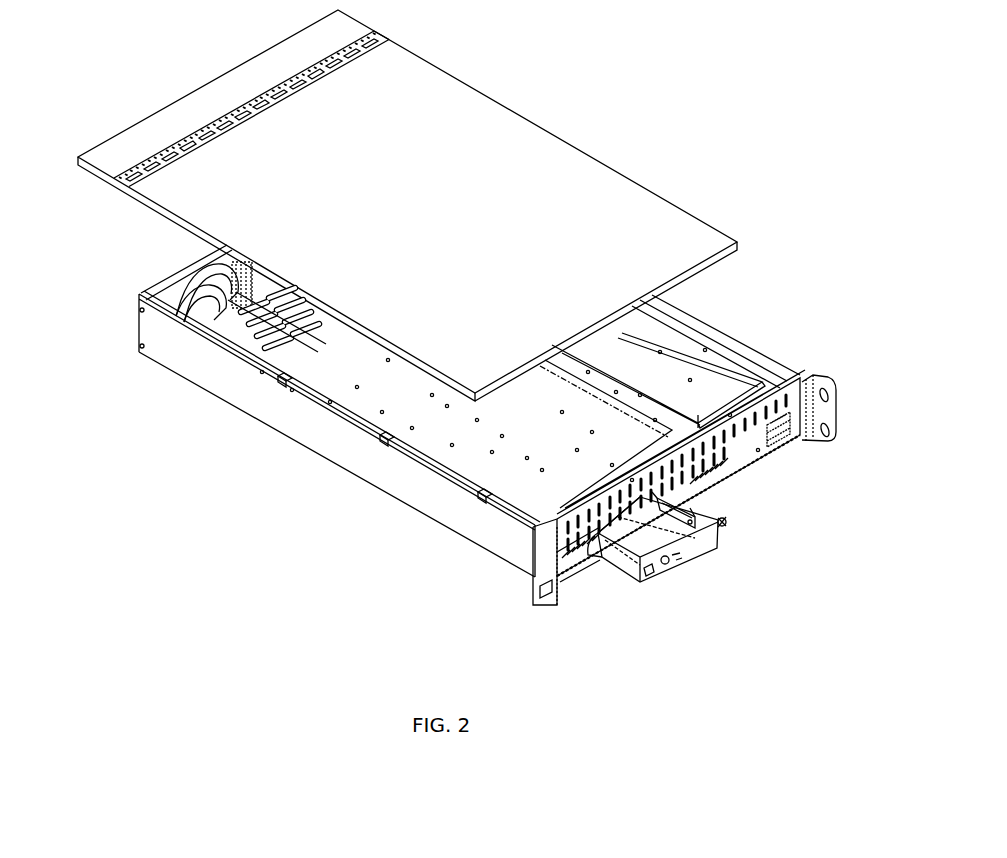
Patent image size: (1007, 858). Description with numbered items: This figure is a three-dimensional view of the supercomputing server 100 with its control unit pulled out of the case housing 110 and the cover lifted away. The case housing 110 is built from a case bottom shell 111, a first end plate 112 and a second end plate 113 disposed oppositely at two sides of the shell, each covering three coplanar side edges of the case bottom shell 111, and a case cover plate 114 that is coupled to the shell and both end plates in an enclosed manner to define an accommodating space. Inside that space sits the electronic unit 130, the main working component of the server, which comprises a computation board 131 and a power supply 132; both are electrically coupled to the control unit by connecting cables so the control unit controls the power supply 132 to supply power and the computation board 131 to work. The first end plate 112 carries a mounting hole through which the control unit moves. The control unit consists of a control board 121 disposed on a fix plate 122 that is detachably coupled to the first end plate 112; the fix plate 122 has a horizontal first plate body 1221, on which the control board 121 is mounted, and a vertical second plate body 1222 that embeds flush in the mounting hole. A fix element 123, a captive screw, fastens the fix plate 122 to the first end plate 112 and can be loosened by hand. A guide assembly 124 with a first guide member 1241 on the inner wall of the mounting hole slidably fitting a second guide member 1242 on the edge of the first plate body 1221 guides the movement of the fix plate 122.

The supercomputing server 100 is at (690, 105).
The case housing 110 is at (393, 633).
The case bottom shell 111 is at (300, 430).
The first end plate 112 is at (533, 548).
The second end plate 113 is at (175, 290).
The case cover plate 114 is at (348, 250).
The control board 121 is at (690, 518).
The fix plate 122 is at (767, 595).
The first plate body 1221 is at (645, 572).
The second plate body 1222 is at (665, 565).
The fix element 123 is at (727, 527).
The guide assembly 124 is at (612, 636).
The first guide member 1241 is at (552, 580).
The second guide member 1242 is at (600, 556).
The electronic unit 130 is at (797, 250).
The computation board 131 is at (633, 437).
The power supply 132 is at (675, 356).